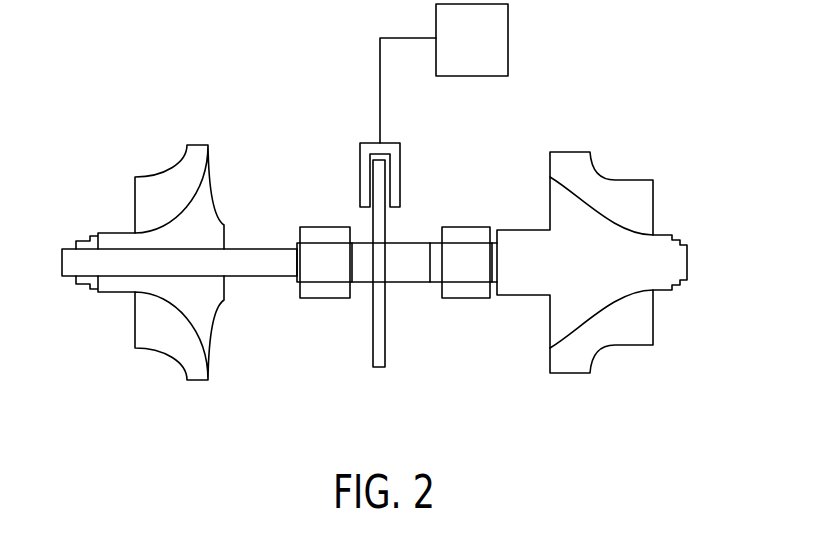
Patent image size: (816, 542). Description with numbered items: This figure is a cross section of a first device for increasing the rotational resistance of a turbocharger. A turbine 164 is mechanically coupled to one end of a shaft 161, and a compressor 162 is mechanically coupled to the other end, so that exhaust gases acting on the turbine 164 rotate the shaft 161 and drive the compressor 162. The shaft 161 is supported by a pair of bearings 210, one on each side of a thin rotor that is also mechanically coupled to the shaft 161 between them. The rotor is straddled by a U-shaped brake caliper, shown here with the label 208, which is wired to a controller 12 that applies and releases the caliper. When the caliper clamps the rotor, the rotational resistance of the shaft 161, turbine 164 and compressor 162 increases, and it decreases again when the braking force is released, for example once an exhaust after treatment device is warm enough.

The controller 12 is at (459, 50).
The shaft 161 is at (245, 278).
The compressor 162 is at (195, 380).
The turbine 164 is at (567, 373).
The speed sensor 208 is at (399, 143).
The bearings 210 is at (320, 227).